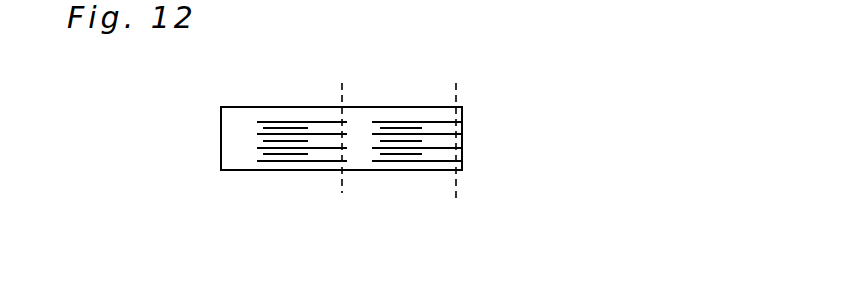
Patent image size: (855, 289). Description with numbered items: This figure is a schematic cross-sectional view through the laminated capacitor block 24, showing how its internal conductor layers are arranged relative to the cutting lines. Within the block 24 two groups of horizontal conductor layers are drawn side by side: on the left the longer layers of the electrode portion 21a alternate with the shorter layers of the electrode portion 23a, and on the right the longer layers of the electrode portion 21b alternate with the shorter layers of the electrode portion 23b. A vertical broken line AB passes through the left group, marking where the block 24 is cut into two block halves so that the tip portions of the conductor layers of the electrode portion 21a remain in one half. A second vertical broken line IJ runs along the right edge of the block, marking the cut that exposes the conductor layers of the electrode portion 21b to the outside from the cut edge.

The capacitor block 24 is at (220, 170).
The electrode portion 21a is at (332, 149).
The electrode portion 23a is at (278, 141).
The electrode portion 21b is at (445, 150).
The electrode portion 23b is at (390, 142).
The broken line A-B AB is at (342, 92).
The broken line I-J IJ is at (456, 100).